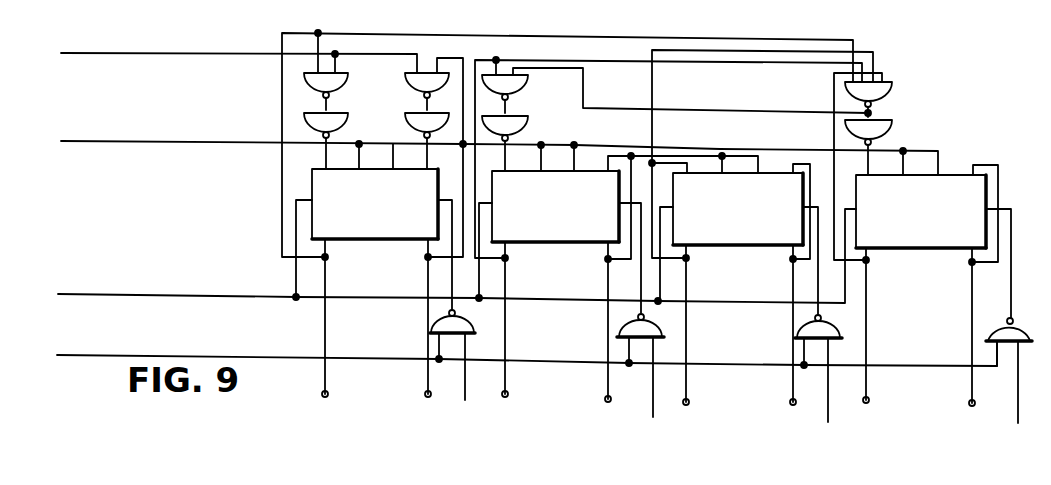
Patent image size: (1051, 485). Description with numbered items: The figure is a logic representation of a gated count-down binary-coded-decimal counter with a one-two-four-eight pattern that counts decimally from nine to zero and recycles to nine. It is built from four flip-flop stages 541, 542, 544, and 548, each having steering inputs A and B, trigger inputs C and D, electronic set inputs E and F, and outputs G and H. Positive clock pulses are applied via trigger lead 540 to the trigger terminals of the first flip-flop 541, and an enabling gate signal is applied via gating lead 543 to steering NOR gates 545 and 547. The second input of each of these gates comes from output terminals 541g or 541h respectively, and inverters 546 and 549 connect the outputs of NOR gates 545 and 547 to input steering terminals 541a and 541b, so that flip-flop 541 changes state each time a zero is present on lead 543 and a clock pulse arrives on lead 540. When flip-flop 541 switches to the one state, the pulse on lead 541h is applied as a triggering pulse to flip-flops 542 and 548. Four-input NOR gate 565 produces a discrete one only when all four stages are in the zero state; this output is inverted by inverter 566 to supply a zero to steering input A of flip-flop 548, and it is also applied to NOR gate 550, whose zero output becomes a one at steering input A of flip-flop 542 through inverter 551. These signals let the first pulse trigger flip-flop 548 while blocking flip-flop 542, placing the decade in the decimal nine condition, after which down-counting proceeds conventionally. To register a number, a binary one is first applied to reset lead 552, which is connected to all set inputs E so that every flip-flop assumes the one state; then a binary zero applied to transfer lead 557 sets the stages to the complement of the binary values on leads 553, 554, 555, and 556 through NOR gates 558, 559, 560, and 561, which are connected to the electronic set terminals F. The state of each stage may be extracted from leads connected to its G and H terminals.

The gating lead 543 is at (178, 53).
The trigger lead 540 is at (210, 141).
The reset lead 552 is at (186, 294).
The transfer lead 557 is at (215, 355).
The first flip-flop stage 541 is at (341, 240).
The input steering terminal 541a is at (326, 155).
The input steering terminal 541b is at (427, 156).
The output terminal 541g is at (327, 246).
The output terminal 541h is at (427, 245).
The second flip-flop stage 542 is at (527, 244).
The third flip-flop stage 544 is at (765, 247).
The fourth flip-flop stage 548 is at (947, 249).
The steering NOR gate 545 is at (343, 77).
The inverter 546 is at (357, 113).
The steering NOR gate 547 is at (407, 86).
The inverter 549 is at (408, 113).
The NOR gate 550 is at (527, 80).
The inverter 551 is at (526, 120).
The four-input NOR gate 565 is at (890, 82).
The inverter 566 is at (890, 122).
The NOR gate 558 is at (478, 327).
The NOR gate 559 is at (663, 329).
The NOR gate 560 is at (842, 331).
The NOR gate 561 is at (986, 333).
The lead 553 is at (462, 394).
The lead 554 is at (652, 400).
The lead 555 is at (828, 400).
The lead 556 is at (1017, 402).